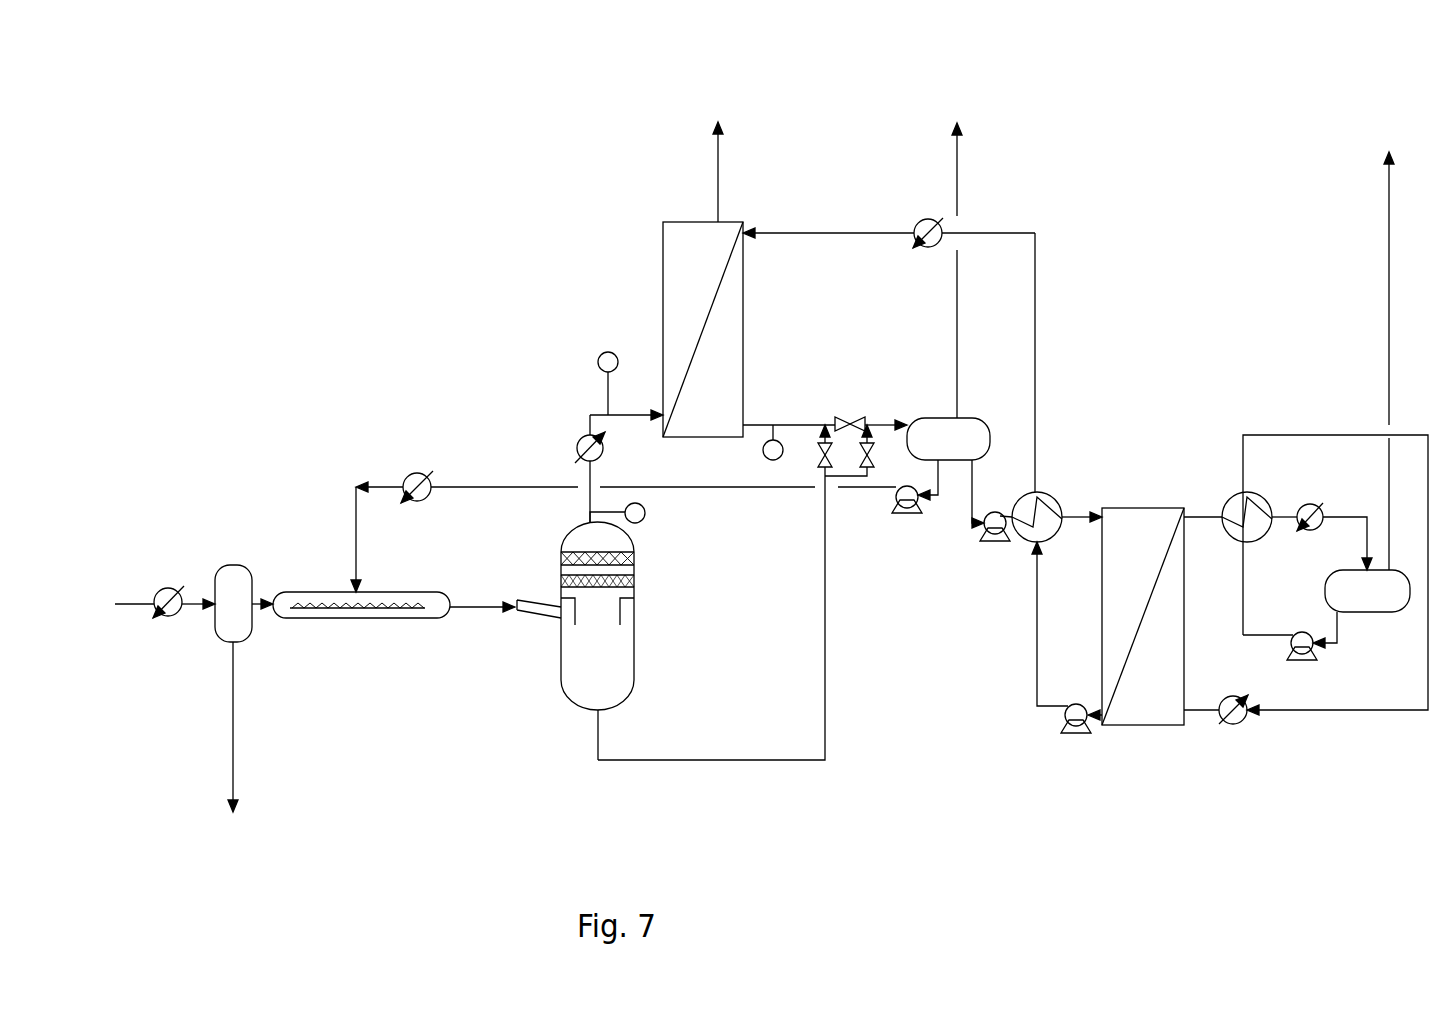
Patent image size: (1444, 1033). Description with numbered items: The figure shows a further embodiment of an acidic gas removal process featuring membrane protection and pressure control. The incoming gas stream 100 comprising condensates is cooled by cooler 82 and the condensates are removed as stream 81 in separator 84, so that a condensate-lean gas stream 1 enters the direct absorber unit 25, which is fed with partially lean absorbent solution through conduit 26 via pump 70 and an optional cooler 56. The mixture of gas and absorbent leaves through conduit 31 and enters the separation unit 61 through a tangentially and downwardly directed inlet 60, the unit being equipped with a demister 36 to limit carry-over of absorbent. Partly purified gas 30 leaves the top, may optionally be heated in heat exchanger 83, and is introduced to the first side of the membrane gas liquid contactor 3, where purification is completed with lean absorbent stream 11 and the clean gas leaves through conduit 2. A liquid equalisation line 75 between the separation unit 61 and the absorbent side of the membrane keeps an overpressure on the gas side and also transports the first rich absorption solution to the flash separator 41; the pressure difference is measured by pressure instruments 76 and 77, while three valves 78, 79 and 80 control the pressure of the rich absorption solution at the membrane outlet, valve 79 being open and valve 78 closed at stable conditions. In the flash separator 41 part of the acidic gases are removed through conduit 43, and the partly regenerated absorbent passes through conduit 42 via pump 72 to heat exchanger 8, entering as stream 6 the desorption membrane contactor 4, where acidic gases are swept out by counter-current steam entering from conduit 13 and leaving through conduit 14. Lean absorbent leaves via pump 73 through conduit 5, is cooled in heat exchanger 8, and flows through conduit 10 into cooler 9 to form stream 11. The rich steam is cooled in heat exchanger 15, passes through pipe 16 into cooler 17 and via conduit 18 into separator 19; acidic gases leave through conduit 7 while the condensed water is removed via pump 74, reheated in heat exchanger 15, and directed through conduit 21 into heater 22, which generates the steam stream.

The gas stream 1 is at (253, 598).
The conduit 2 is at (707, 172).
The membrane gas liquid contactor 3 is at (703, 344).
The desorption membrane contactor 4 is at (1143, 636).
The conduit 5 is at (1059, 631).
The stream 6 is at (1082, 499).
The conduit 7 is at (1389, 340).
The heat exchanger 8 is at (1037, 504).
The cooler 9 is at (928, 219).
The conduit 10 is at (1055, 362).
The stream of liquid absorbent 11 is at (889, 217).
The conduit 13 is at (1202, 693).
The conduit 14 is at (1203, 505).
The heat exchanger 15 is at (1257, 526).
The pipe 16 is at (1284, 502).
The cooler 17 is at (1318, 531).
The conduit 18 is at (1352, 527).
The separator 19 is at (1367, 591).
The conduit 21 is at (1335, 556).
The heater 22 is at (1242, 723).
The direct absorber unit 25 is at (361, 623).
The conduit 26 is at (663, 472).
The conduit 30 is at (626, 403).
The conduit 31 is at (450, 608).
The demister 36 is at (561, 558).
The flash separator 41 is at (948, 439).
The conduit 42 is at (957, 502).
The conduit 43 is at (975, 264).
The cooler 56 is at (392, 531).
The inlet 60 is at (533, 628).
The separation unit 61 is at (612, 641).
The pump 70 is at (906, 506).
The pump 72 is at (995, 543).
The pump 73 is at (1077, 734).
The pump 74 is at (1290, 651).
The liquid equalisation line 75 is at (711, 631).
The pressure instrument 76 is at (637, 433).
The pressure instrument 77 is at (780, 452).
The valve 78 is at (808, 452).
The valve 79 is at (865, 450).
The valve 80 is at (870, 408).
The stream 81 is at (251, 727).
The cooler 82 is at (183, 587).
The heat exchanger 83 is at (572, 464).
The separator 84 is at (244, 590).
The gas stream 100 is at (120, 624).